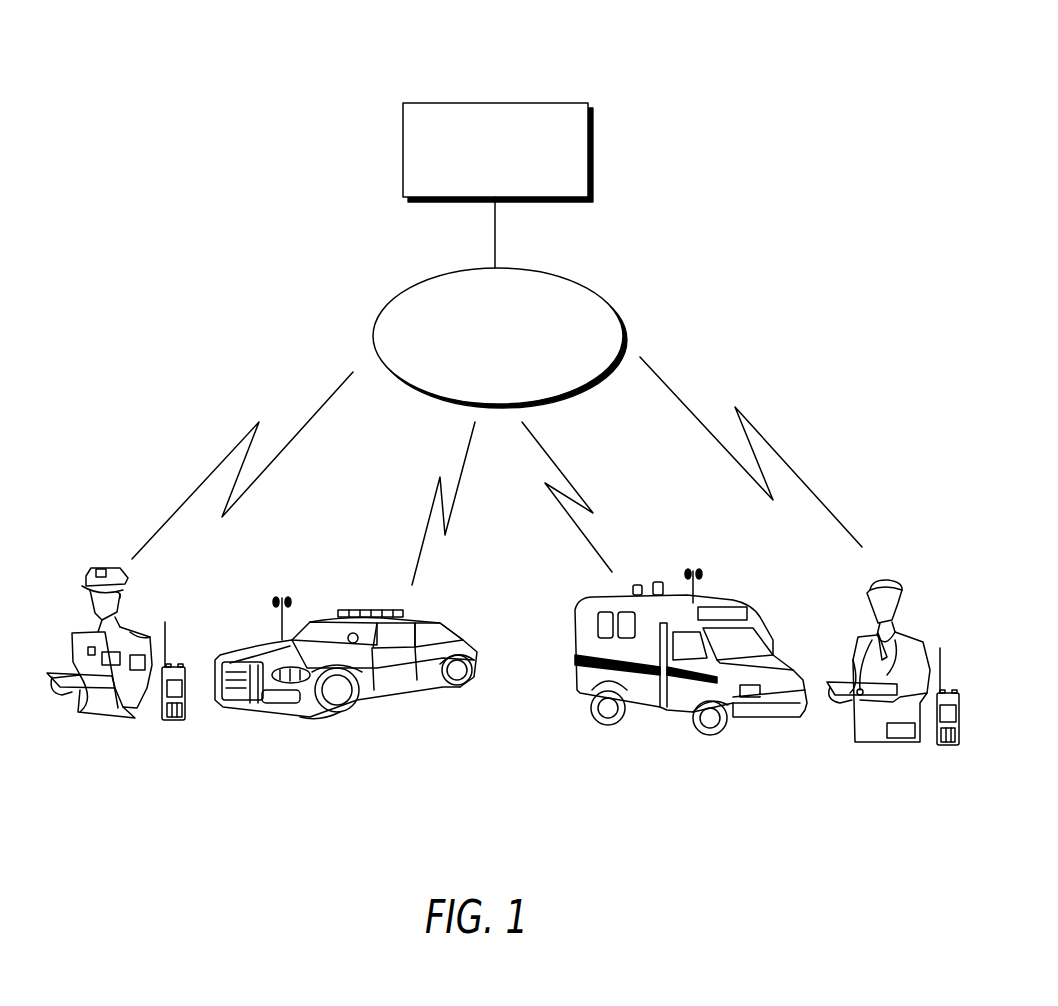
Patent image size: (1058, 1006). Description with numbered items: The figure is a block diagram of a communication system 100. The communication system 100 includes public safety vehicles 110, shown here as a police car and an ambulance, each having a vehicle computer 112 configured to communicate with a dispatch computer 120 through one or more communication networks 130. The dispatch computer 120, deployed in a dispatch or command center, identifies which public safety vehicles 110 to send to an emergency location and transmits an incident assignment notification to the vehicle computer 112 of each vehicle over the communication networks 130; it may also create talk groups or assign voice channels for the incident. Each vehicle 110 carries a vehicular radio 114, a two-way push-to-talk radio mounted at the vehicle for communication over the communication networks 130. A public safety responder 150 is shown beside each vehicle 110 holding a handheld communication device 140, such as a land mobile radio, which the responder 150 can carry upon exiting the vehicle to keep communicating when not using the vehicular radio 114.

The communication system 100 is at (213, 29).
The public safety vehicle 110 is at (575, 607).
The vehicle computer 112 is at (310, 638).
The vehicular radio 114 is at (703, 585).
The dispatch computer 120 is at (495, 103).
The communication networks 130 is at (598, 292).
The handheld communication device 140 is at (173, 720).
The public safety responder 150 is at (108, 566).